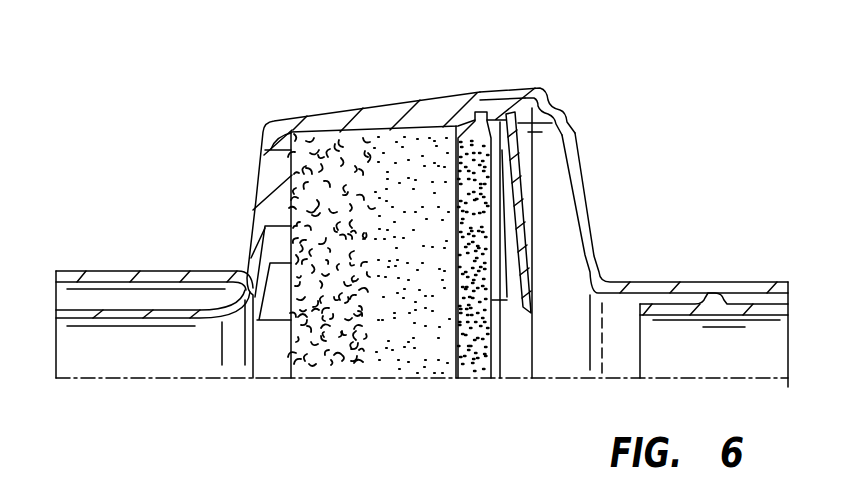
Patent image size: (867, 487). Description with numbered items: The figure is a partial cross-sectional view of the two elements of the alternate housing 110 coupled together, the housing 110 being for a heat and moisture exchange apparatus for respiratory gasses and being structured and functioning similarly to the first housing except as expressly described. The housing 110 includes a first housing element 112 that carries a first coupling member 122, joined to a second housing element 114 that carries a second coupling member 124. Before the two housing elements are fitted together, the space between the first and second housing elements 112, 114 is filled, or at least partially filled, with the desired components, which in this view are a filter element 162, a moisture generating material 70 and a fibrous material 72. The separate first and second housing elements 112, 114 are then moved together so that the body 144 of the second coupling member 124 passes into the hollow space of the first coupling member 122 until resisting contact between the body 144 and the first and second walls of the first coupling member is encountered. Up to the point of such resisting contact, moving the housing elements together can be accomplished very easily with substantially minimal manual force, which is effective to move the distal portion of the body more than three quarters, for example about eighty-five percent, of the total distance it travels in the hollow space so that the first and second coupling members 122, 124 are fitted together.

The moisture generating material 70 is at (413, 347).
The fibrous material 72 is at (328, 347).
The housing 110 is at (333, 100).
The first housing element 112 is at (598, 192).
The second housing element 114 is at (194, 247).
The first coupling member 122 is at (559, 93).
The second coupling member 124 is at (290, 114).
The body 144 is at (480, 95).
The filter element 162 is at (475, 363).